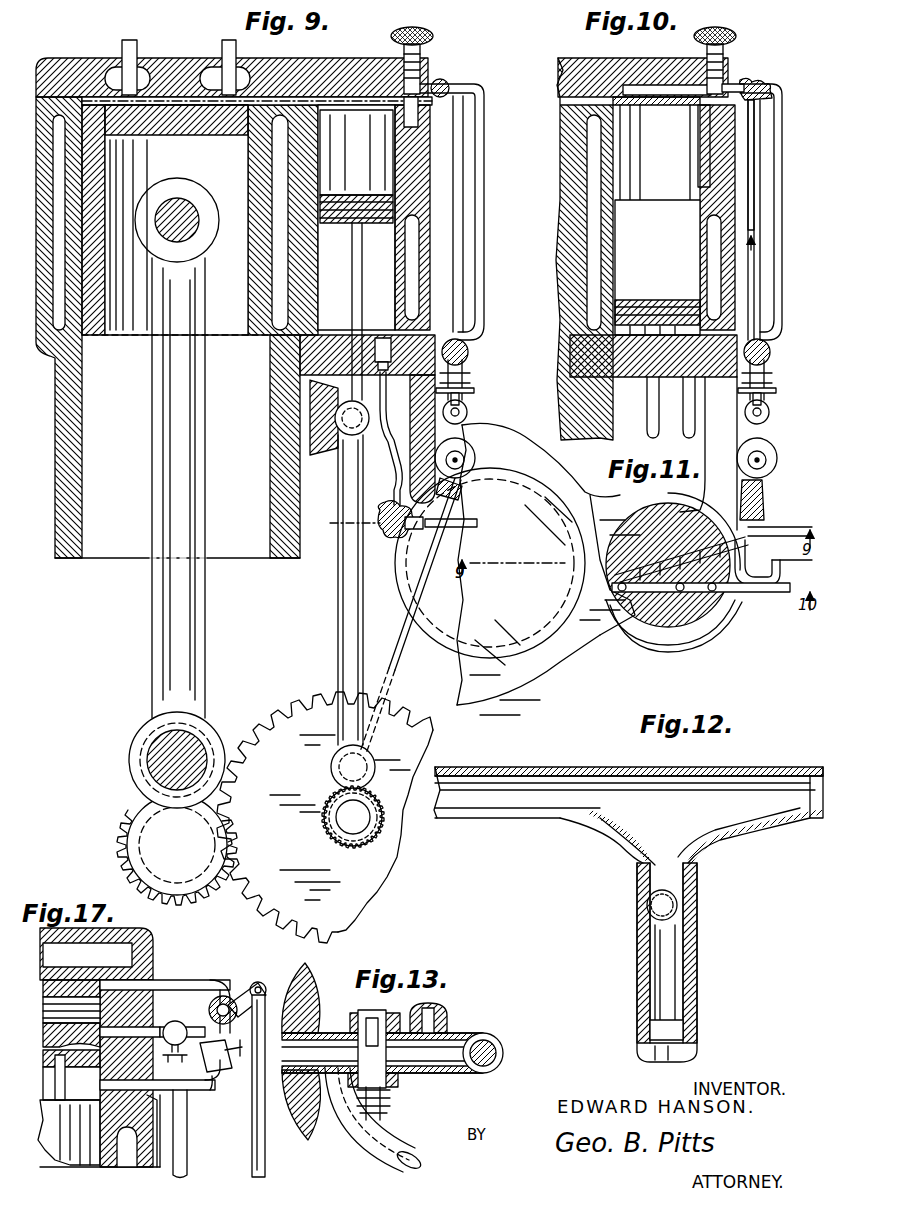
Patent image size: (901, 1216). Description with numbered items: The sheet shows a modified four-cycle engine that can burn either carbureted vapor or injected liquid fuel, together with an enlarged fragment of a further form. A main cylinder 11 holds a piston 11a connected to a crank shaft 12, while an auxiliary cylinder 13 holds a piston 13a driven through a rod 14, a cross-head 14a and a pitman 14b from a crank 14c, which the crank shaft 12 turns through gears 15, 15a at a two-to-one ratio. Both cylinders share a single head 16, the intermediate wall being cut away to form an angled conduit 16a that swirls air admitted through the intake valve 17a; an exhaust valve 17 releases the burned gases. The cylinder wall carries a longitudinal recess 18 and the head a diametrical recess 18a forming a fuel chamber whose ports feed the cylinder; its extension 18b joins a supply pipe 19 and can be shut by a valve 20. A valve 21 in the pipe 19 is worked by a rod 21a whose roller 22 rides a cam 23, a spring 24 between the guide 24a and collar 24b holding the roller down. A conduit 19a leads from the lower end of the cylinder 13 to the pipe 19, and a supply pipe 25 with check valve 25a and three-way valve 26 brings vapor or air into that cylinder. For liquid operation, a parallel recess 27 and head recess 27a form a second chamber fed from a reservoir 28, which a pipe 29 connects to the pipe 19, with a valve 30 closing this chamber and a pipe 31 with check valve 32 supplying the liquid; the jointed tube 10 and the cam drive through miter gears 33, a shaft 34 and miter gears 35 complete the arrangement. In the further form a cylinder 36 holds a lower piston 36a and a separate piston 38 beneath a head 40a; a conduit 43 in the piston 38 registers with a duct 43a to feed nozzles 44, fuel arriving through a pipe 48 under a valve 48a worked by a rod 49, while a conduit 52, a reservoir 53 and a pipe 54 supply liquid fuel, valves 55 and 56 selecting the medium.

In FIG. 11, the jointed fuel tube / section arrow 10 is at (558, 568).
In FIG. 9, the main cylinder 11 is at (62, 468).
In FIG. 11, the main cylinder 11 is at (535, 680).
In FIG. 9, the piston 11a is at (230, 330).
In FIG. 11, the piston 11a is at (462, 645).
In FIG. 9, the crank shaft 12 is at (140, 843).
In FIG. 9, the auxiliary cylinder 13 is at (497, 92).
In FIG. 10, the auxiliary cylinder 13 is at (740, 192).
In FIG. 9, the piston 13a is at (380, 224).
In FIG. 10, the piston 13a is at (637, 300).
In FIG. 9, the rod 14 is at (356, 292).
In FIG. 10, the rod 14 is at (652, 405).
In FIG. 9, the cross-head 14a is at (330, 452).
In FIG. 9, the pitman 14b is at (340, 625).
In FIG. 9, the crank 14c is at (333, 766).
In FIG. 9, the gear 15 is at (280, 718).
In FIG. 9, the gear 15a is at (258, 895).
In FIG. 9, the head 16 is at (275, 62).
In FIG. 10, the head 16 is at (640, 62).
In FIG. 13, the head 16 is at (306, 990).
In FIG. 9, the conduit 16a is at (316, 64).
In FIG. 10, the conduit 16a is at (565, 100).
In FIG. 11, the conduit 16a is at (580, 610).
In FIG. 9, the exhaust valve 17 is at (120, 46).
In FIG. 9, the intake valve 17a is at (222, 46).
In FIG. 9, the recess 18 is at (395, 137).
In FIG. 9, the recess 18a is at (370, 64).
In FIG. 11, the recess 18a is at (620, 548).
In FIG. 9, the outward extension of recess 18b is at (435, 112).
In FIG. 13, the outward extension of recess 18b is at (322, 1028).
In FIG. 9, the supply pipe 19 is at (480, 175).
In FIG. 10, the supply pipe 19 is at (778, 175).
In FIG. 13, the supply pipe 19 is at (470, 1034).
In FIG. 9, the conduit 19a is at (405, 380).
In FIG. 9, the valve 20 is at (420, 52).
In FIG. 9, the valve 21 is at (447, 82).
In FIG. 10, the valve 21 is at (746, 80).
In FIG. 13, the valve 21 is at (393, 1078).
In FIG. 9, the rod 21a is at (466, 260).
In FIG. 10, the rod 21a is at (766, 240).
In FIG. 13, the rod 21a is at (442, 1016).
In FIG. 9, the roller 22 is at (468, 412).
In FIG. 10, the roller 22 is at (770, 412).
In FIG. 9, the cam 23 is at (468, 443).
In FIG. 10, the cam 23 is at (770, 443).
In FIG. 9, the spring 24 is at (472, 374).
In FIG. 10, the spring 24 is at (774, 374).
In FIG. 9, the guide 24a is at (470, 356).
In FIG. 10, the guide 24a is at (772, 356).
In FIG. 9, the collar 24b is at (476, 390).
In FIG. 10, the collar 24b is at (778, 390).
In FIG. 9, the supply pipe 25 is at (386, 445).
In FIG. 9, the check valve 25a is at (380, 338).
In FIG. 9, the three-way valve 26 is at (398, 538).
In FIG. 10, the recess 27 is at (700, 143).
In FIG. 10, the recess 27a is at (664, 62).
In FIG. 11, the recess 27a is at (642, 642).
In FIG. 10, the reservoir 28 is at (767, 95).
In FIG. 12, the reservoir 28 is at (705, 846).
In FIG. 10, the pipe 29 is at (775, 575).
In FIG. 13, the pipe 29 is at (397, 1150).
In FIG. 10, the valve 30 is at (732, 50).
In FIG. 10, the pipe 31 is at (756, 140).
In FIG. 12, the pipe 31 is at (692, 972).
In FIG. 12, the check valve 32 is at (646, 905).
In FIG. 9, the miter gears 33 is at (463, 485).
In FIG. 9, the shaft 34 is at (420, 595).
In FIG. 9, the miter gears 35 is at (375, 760).
In FIG. 17, the cylinder 36 is at (100, 1083).
In FIG. 17, the piston 36a is at (82, 1160).
In FIG. 17, the piston 38 is at (74, 990).
In FIG. 17, the cylinder head 40a is at (154, 950).
In FIG. 17, the fuel conduit 43 is at (90, 1047).
In FIG. 17, the duct 43a is at (158, 1020).
In FIG. 17, the nozzles 44 is at (48, 1110).
In FIG. 17, the pipe 48 is at (160, 982).
In FIG. 17, the valve 48a is at (238, 990).
In FIG. 17, the rod 49 is at (252, 1160).
In FIG. 17, the conduit 52 is at (155, 1108).
In FIG. 17, the reservoir 53 is at (190, 1095).
In FIG. 17, the pipe 54 is at (215, 1090).
In FIG. 17, the valve 55 is at (182, 1051).
In FIG. 17, the valve 56 is at (223, 1059).